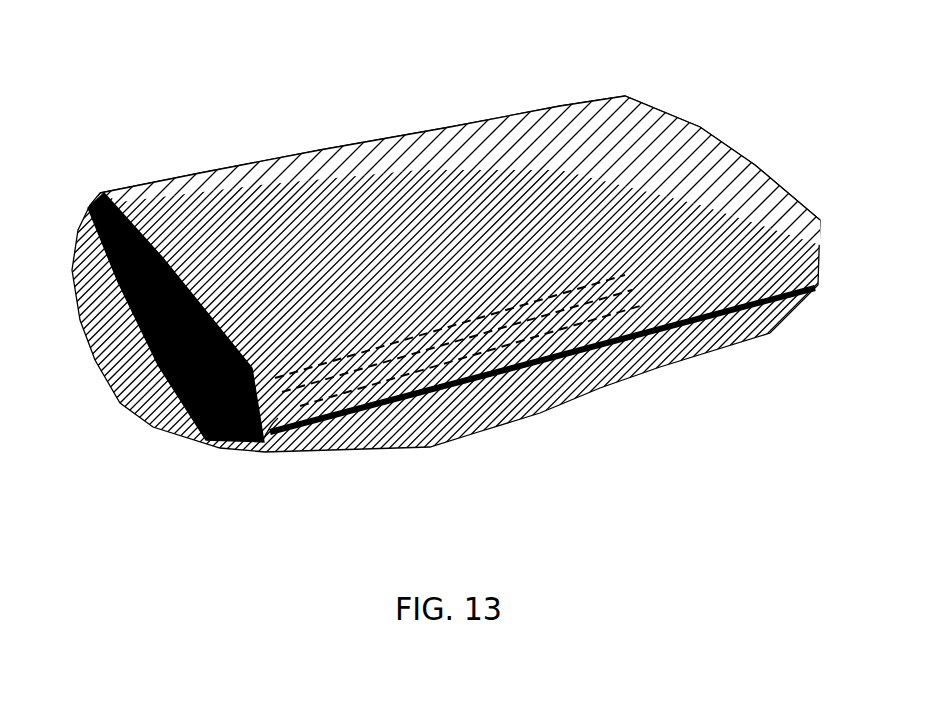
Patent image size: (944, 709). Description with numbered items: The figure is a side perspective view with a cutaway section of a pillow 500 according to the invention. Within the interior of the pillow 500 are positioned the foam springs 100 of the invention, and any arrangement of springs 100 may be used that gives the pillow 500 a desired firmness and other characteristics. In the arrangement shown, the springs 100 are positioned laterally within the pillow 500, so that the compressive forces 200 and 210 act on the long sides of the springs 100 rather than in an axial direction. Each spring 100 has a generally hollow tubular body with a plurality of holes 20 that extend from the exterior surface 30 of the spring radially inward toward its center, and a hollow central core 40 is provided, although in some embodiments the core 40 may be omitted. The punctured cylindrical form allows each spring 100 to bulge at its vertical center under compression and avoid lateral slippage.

The pillow 500 is at (472, 350).
The compressive force 200 is at (405, 125).
The springs 100 is at (94, 244).
The compressive force 210 is at (453, 405).
The exterior surface 30 is at (453, 359).
The holes 20 is at (470, 356).
The hollow central core 40 is at (272, 430).